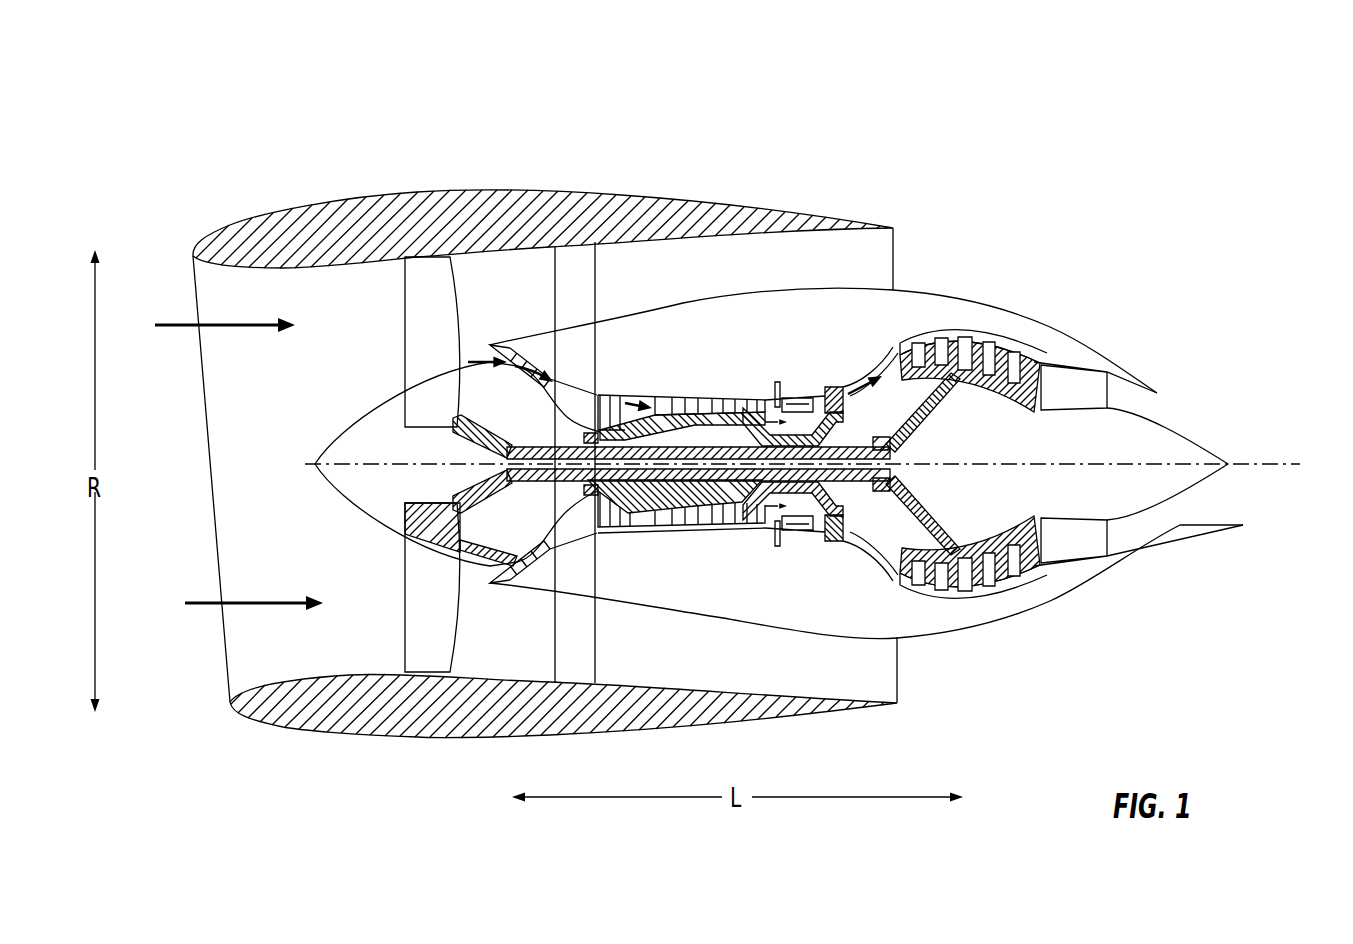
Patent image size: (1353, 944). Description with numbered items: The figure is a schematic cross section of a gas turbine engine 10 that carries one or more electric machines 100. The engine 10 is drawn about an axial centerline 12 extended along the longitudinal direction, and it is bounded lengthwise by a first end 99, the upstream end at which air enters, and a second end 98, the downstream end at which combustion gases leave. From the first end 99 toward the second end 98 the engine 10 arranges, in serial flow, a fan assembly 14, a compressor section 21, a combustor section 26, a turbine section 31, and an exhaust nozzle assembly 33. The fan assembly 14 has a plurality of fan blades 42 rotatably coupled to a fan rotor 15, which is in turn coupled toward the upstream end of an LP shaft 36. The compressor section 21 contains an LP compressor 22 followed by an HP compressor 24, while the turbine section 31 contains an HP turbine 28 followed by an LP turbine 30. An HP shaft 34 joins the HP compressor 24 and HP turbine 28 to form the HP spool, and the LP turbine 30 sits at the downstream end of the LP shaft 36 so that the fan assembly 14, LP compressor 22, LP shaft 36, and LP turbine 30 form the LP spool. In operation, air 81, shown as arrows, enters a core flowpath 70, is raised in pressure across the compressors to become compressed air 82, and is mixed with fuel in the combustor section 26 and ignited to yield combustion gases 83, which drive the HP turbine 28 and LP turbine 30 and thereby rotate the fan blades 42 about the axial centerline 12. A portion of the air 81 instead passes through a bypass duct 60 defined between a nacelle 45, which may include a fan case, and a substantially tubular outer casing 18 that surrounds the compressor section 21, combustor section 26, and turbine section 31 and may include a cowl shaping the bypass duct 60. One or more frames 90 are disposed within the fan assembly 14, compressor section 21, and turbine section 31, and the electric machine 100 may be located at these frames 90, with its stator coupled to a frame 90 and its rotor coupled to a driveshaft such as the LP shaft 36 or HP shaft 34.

The gas turbine engine 10 is at (372, 127).
The axial centerline 12 is at (1247, 466).
The fan assembly 14 is at (370, 350).
The fan rotor 15 is at (522, 432).
The outer casing 18 is at (1082, 358).
The compressor section 21 is at (658, 368).
The low pressure (LP) compressor 22 is at (537, 350).
The high pressure (HP) compressor 24 is at (667, 394).
The combustor section 26 is at (784, 355).
The HP turbine 28 is at (843, 390).
The LP turbine 30 is at (967, 388).
The turbine section 31 is at (962, 315).
The exhaust nozzle assembly 33 is at (1120, 446).
The HP shaft 34 is at (845, 426).
The LP shaft 36 is at (920, 427).
The fan blades 42 is at (412, 306).
The nacelle 45 is at (252, 224).
The bypass duct 60 is at (482, 262).
The core flowpath 70 is at (483, 363).
The air 81 is at (240, 325).
The compressed air 82 is at (776, 386).
The combustion gases 83 is at (832, 388).
The frame 90 is at (579, 386).
The second end 98 is at (1338, 484).
The first end 99 is at (156, 490).
The electric machine 100 is at (572, 439).